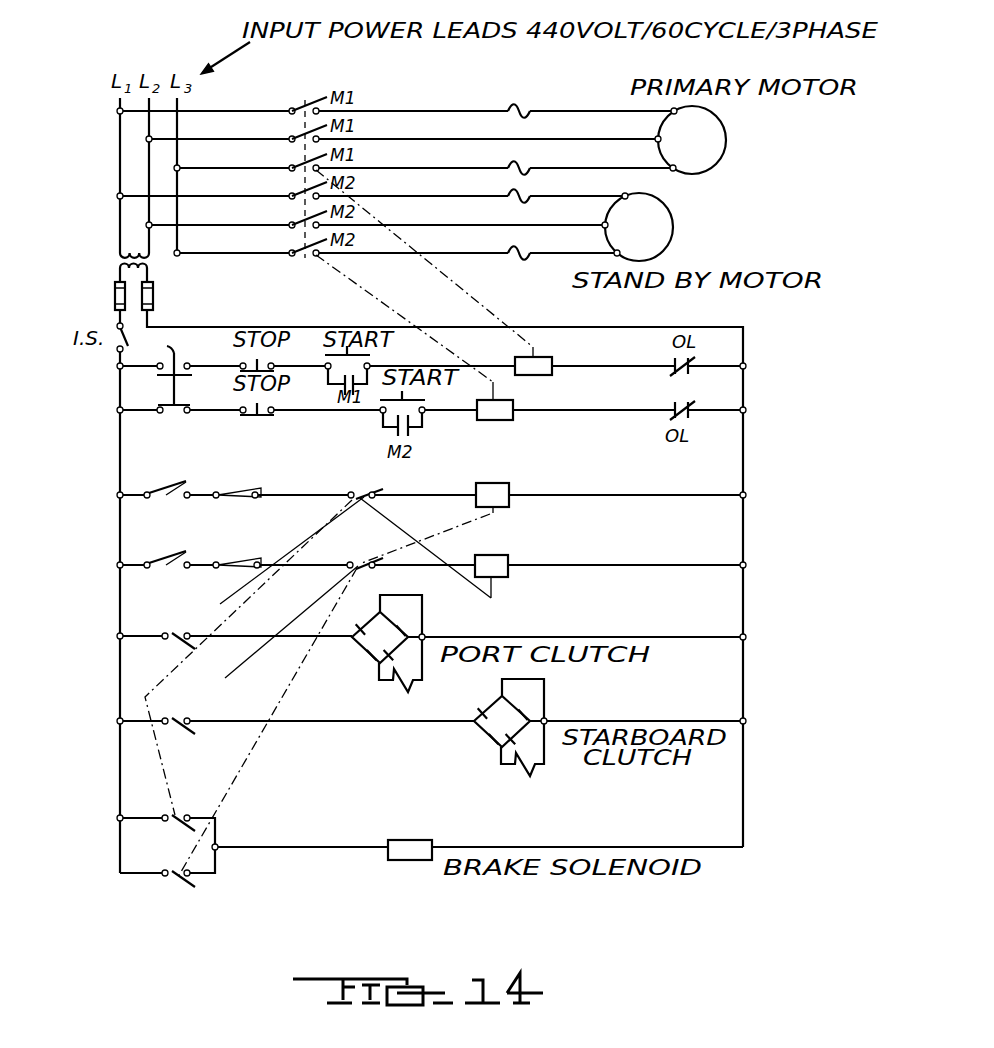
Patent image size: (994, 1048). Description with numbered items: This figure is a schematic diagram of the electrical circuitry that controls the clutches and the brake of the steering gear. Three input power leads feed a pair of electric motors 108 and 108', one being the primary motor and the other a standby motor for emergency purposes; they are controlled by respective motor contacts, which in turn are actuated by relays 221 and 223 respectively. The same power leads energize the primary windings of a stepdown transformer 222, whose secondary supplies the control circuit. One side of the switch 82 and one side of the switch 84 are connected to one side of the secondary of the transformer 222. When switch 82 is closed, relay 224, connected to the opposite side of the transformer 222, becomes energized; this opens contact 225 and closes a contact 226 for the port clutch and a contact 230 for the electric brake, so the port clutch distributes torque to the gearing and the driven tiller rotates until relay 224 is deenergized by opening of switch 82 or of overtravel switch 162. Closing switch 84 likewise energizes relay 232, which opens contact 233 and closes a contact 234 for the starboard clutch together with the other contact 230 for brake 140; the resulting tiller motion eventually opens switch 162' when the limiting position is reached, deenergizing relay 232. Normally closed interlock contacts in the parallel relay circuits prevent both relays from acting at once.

The electric motor 108 is at (723, 140).
The electric motor 108' is at (673, 227).
The stepdown transformer 222 is at (148, 259).
The relay 221 is at (548, 359).
The relay 223 is at (505, 416).
The relay 224 is at (509, 486).
The relay 232 is at (508, 558).
The contact 233 is at (362, 494).
The contact 225 is at (358, 562).
The switch 82 is at (178, 484).
The switch 84 is at (178, 554).
The overtravel switch 162 is at (250, 471).
The switch 162' is at (260, 544).
The contact 226 is at (173, 633).
The contact 234 is at (173, 718).
The contact 230 is at (175, 815).
The brake 140 is at (418, 845).